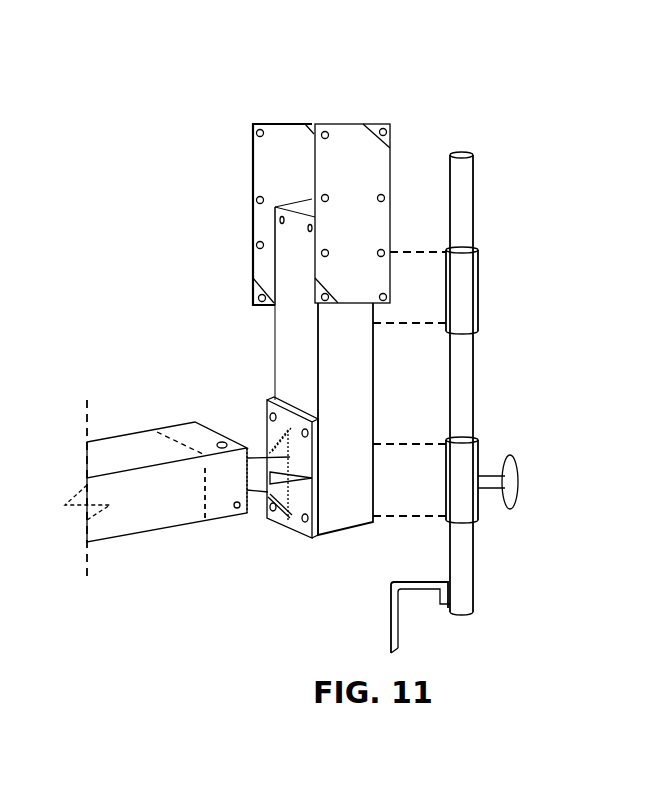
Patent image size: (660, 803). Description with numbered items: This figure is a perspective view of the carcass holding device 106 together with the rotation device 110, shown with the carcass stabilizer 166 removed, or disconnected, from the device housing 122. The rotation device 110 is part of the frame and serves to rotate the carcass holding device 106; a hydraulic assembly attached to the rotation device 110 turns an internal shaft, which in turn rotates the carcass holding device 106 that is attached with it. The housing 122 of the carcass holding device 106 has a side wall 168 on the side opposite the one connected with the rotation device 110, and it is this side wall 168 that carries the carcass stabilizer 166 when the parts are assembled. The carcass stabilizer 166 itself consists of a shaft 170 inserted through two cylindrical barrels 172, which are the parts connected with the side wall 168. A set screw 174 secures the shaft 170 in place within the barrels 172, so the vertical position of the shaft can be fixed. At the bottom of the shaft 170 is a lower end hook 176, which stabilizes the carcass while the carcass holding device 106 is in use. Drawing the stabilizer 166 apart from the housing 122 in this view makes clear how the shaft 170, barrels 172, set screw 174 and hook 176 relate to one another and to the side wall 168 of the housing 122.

The carcass holding device 106 is at (227, 195).
The rotation device 110 is at (160, 512).
The device housing 122 is at (290, 347).
The carcass stabilizer 166 is at (575, 360).
The side wall 168 is at (373, 365).
The shaft 170 is at (465, 397).
The cylindrical barrels 172 is at (478, 285).
The set screw 174 is at (518, 475).
The lower end hook 176 is at (397, 633).